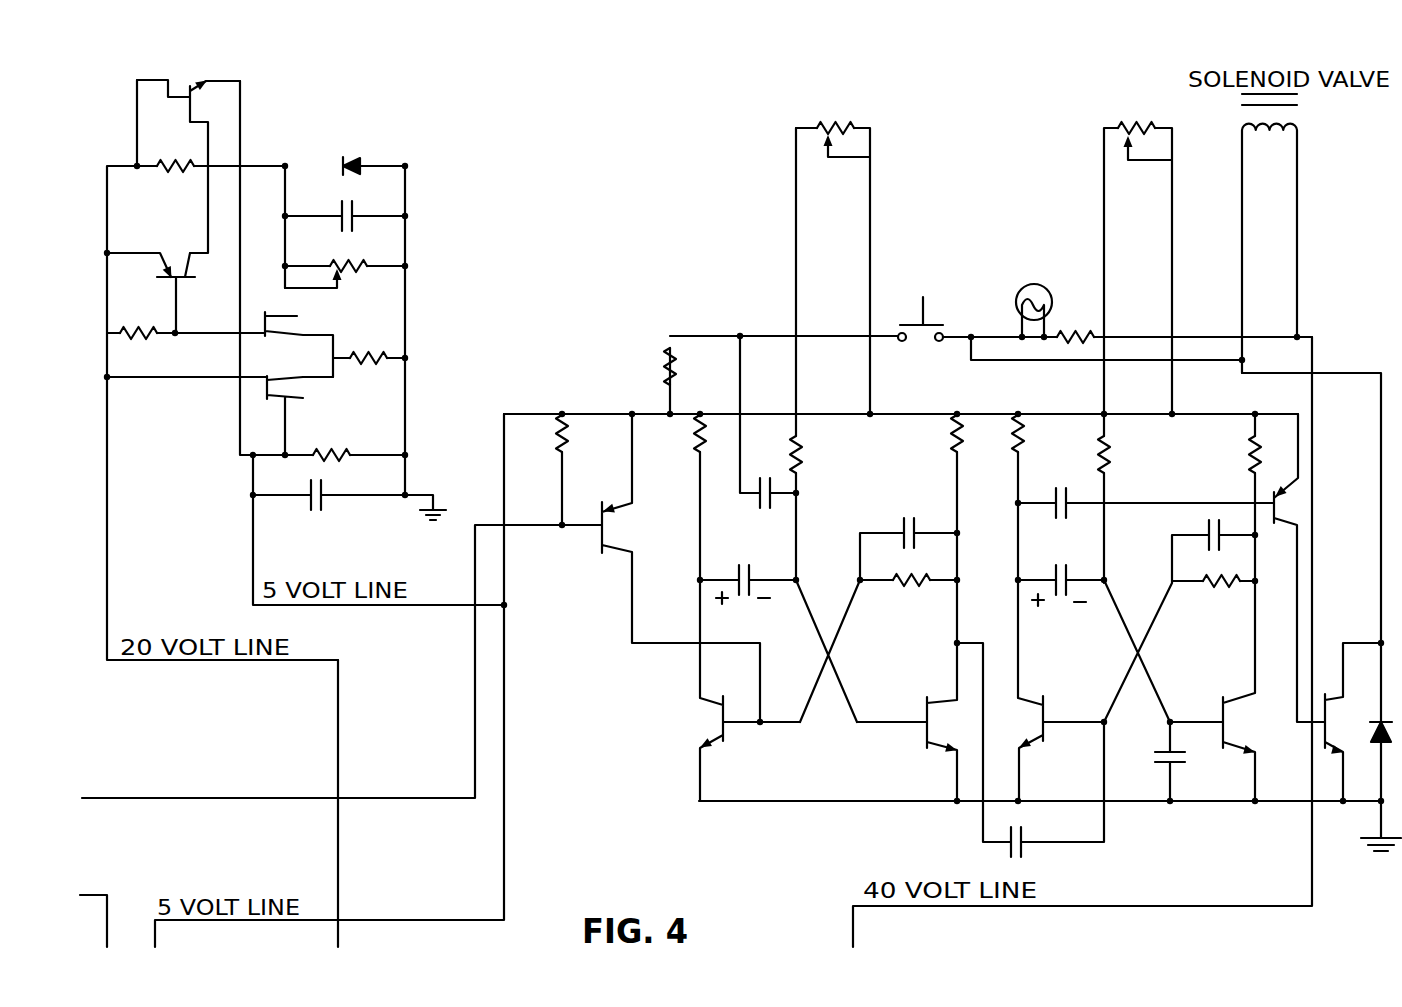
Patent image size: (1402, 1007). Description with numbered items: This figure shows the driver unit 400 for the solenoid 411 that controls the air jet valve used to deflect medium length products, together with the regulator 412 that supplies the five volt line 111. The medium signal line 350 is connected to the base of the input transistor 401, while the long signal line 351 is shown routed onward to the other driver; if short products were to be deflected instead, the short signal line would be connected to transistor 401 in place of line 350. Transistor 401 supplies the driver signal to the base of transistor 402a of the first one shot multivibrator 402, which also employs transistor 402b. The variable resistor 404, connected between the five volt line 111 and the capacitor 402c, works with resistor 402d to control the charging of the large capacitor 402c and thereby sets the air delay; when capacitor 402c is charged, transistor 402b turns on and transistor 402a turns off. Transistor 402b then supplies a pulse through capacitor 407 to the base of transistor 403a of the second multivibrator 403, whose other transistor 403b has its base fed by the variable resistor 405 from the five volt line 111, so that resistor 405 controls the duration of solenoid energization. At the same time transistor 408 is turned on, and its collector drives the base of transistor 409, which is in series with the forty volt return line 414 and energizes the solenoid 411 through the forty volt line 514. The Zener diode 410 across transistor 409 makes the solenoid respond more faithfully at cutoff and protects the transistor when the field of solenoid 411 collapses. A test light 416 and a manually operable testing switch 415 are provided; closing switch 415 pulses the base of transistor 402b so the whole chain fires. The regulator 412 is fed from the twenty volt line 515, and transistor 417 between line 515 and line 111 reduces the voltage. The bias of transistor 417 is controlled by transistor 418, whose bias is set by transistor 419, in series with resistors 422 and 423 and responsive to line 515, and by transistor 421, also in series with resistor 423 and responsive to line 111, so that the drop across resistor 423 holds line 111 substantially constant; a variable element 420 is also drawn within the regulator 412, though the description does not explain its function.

The five volt line 111 is at (895, 414).
The medium signal line 350 is at (318, 784).
The long signal line 351 is at (107, 910).
The driver unit 400 is at (550, 404).
The input transistor 401 is at (612, 532).
The one shot multivibrator 402 is at (907, 659).
The transistor 402a is at (727, 735).
The transistor 402b is at (925, 736).
The capacitor 402c is at (732, 568).
The resistor 402d is at (799, 452).
The one shot multivibrator 403 is at (1098, 659).
The transistor 403a is at (1047, 740).
The transistor 403b is at (1220, 712).
The variable resistor 404 is at (847, 124).
The variable resistor 405 is at (1152, 129).
The capacitor 407 is at (1047, 837).
The transistor 408 is at (1281, 523).
The transistor 409 is at (1337, 700).
The Zener diode 410 is at (1365, 718).
The solenoid 411 is at (1299, 127).
The regulator 412 is at (221, 316).
The 40 volt return line 414 is at (1380, 575).
The testing switch 415 is at (933, 327).
The test light 416 is at (1052, 299).
The transistor 417 is at (207, 88).
The transistor 418 is at (149, 281).
The transistor 419 is at (302, 330).
The variable resistor 420 is at (355, 264).
The transistor 421 is at (302, 384).
The resistor 422 is at (124, 340).
The resistor 423 is at (352, 366).
The 40 volt line 514 is at (1120, 905).
The 20 volt line 515 is at (363, 853).